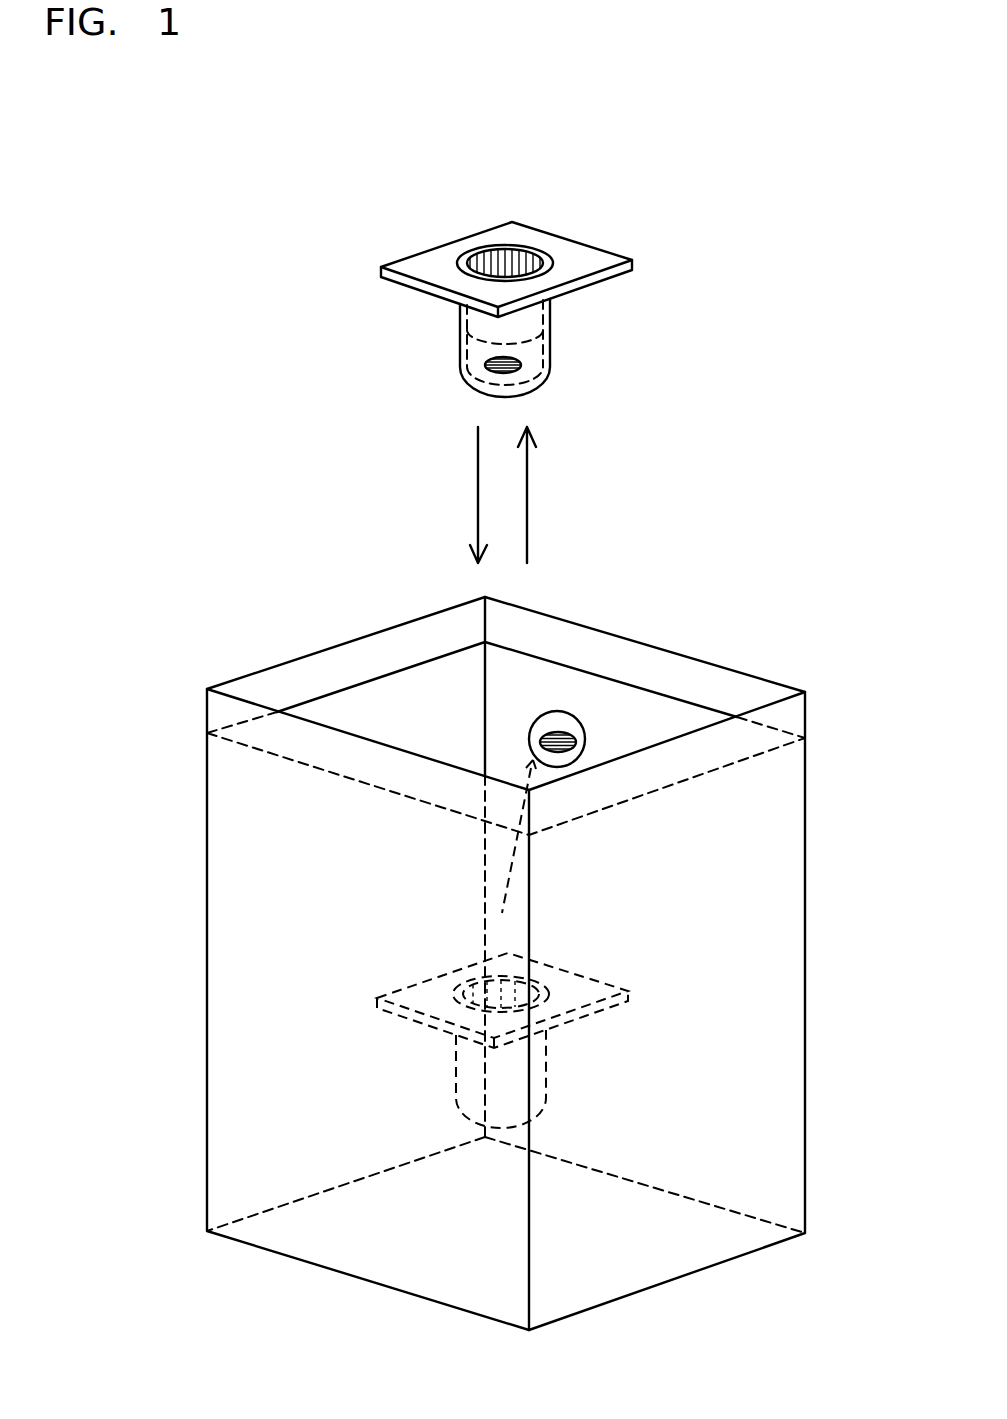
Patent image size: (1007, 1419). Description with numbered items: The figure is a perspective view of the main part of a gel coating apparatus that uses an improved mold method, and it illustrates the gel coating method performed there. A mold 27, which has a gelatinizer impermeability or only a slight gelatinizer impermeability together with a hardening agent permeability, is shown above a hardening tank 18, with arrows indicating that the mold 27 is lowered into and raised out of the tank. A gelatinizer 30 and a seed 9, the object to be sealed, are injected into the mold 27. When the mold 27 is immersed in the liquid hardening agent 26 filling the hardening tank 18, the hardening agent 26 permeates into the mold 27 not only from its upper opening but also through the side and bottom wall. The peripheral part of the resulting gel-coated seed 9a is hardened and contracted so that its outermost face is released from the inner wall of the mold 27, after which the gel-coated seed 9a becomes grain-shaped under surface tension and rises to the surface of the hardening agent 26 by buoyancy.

The hardening tank 18 is at (332, 645).
The hardening agent 26 is at (437, 713).
The gel-coated seed 9a is at (570, 717).
The mold 27 is at (509, 281).
The gelatinizer 30 is at (467, 338).
The seed 9 is at (490, 362).